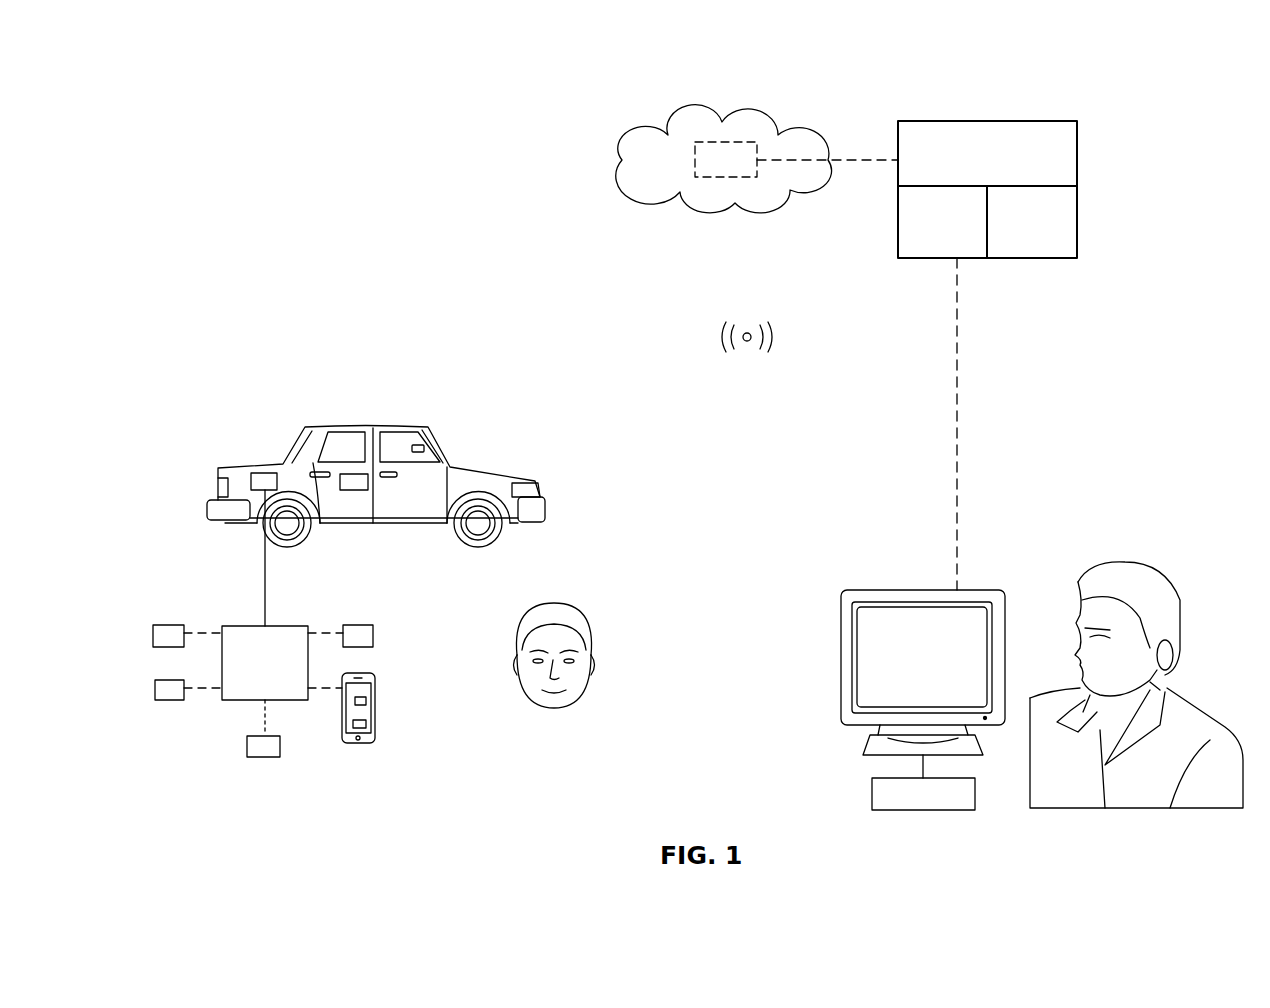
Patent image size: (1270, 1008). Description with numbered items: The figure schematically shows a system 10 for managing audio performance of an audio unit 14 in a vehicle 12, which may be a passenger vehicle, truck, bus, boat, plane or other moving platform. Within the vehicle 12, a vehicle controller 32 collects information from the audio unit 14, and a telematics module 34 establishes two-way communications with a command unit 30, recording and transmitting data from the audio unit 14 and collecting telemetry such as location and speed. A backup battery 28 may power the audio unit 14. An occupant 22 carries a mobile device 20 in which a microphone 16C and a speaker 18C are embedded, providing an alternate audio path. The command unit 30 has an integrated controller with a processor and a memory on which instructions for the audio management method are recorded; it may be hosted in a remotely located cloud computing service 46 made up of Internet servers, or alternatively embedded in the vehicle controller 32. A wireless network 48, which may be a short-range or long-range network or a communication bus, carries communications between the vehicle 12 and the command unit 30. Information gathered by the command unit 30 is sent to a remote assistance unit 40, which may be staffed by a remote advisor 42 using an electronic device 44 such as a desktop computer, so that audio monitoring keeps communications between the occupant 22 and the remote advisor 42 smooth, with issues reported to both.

The system 10 is at (476, 199).
The vehicle 12 is at (470, 428).
The audio unit 14 is at (373, 633).
The microphone 16C is at (366, 702).
The speaker 18C is at (366, 725).
The mobile device 20 is at (375, 738).
The occupant 22 is at (575, 572).
The backup battery 28 is at (155, 688).
The command unit 30 is at (727, 140).
The vehicle controller 32 is at (295, 626).
The telematics module 34 is at (152, 632).
The remote assistance unit 40 is at (1045, 520).
The remote advisor 42 is at (1153, 557).
The electronic device 44 is at (878, 572).
The cloud computing service 46 is at (640, 104).
The wireless network 48 is at (775, 311).